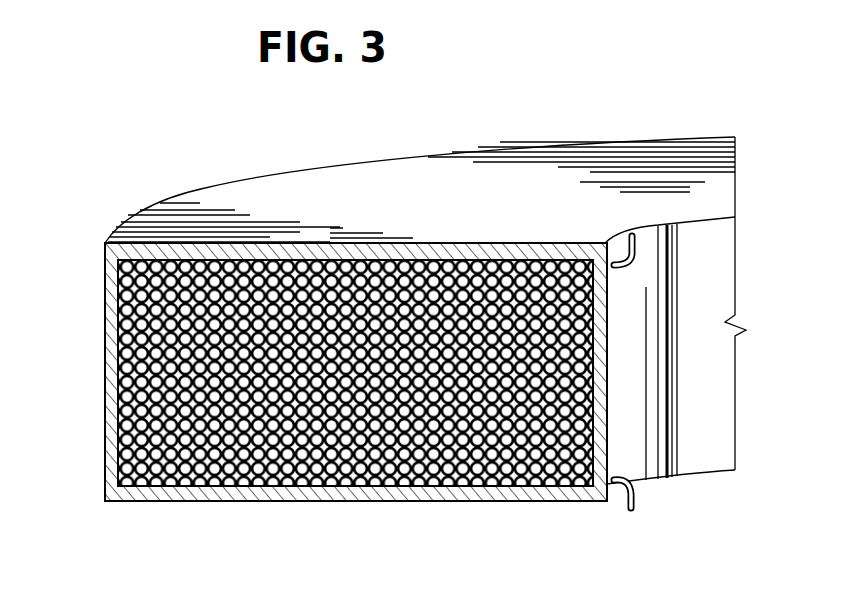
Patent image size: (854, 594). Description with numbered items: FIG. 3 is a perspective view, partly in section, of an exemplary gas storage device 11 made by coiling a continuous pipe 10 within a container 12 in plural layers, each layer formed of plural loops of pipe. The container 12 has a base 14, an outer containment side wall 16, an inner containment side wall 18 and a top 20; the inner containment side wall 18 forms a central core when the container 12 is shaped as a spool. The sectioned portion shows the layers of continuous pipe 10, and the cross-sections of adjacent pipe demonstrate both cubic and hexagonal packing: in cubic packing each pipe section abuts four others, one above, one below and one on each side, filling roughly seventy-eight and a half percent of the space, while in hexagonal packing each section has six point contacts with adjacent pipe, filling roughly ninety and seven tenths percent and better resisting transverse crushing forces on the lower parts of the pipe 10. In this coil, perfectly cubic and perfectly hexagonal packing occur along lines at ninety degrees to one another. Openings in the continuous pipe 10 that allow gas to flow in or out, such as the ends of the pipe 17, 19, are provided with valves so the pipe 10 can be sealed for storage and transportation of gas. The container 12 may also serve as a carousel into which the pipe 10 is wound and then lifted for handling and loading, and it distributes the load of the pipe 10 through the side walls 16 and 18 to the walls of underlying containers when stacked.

The continuous pipe 10 is at (513, 481).
The gas storage device 11 is at (547, 124).
The container 12 is at (228, 180).
The base 14 is at (197, 492).
The outer containment side wall 16 is at (108, 413).
The end of the pipe 17 is at (633, 260).
The inner containment side wall 18 is at (718, 423).
The end of the pipe 19 is at (632, 492).
The top 20 is at (720, 203).